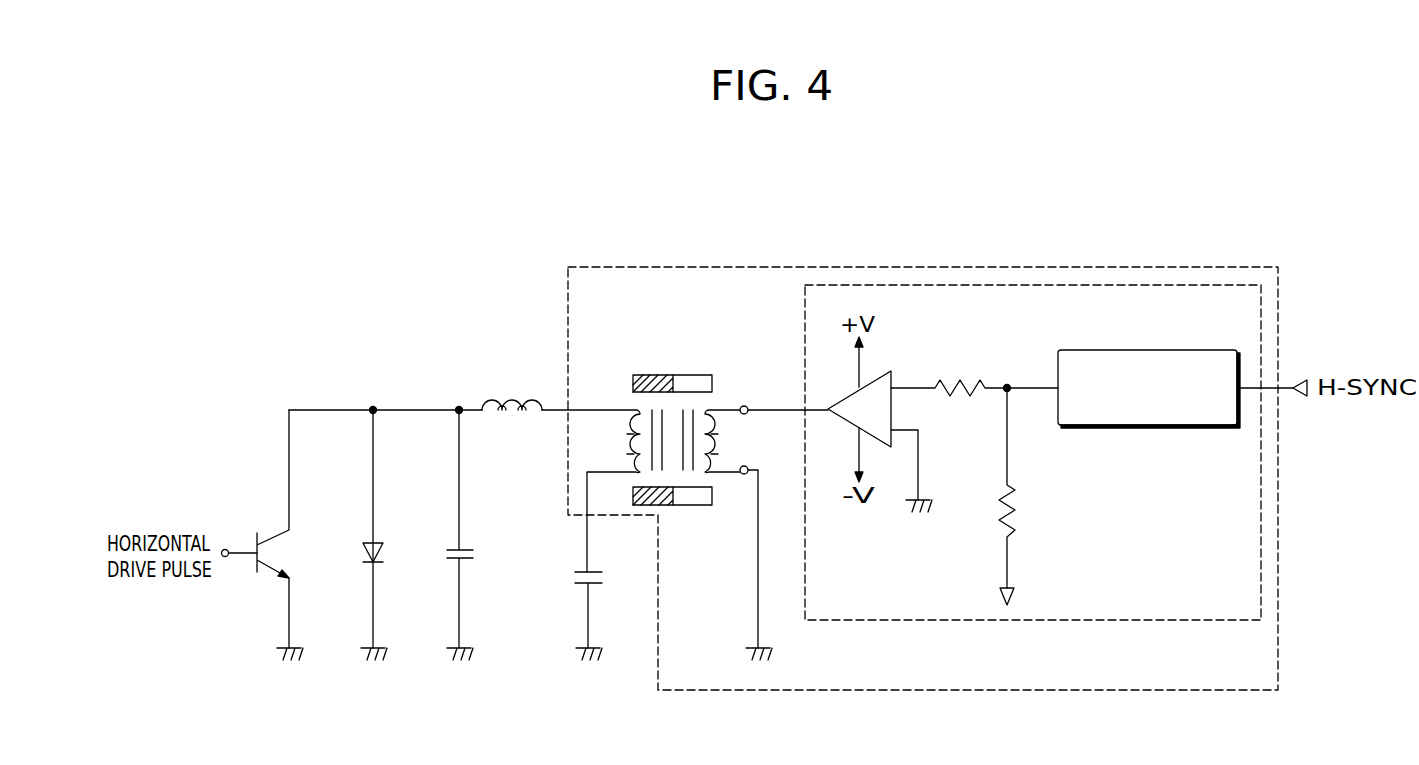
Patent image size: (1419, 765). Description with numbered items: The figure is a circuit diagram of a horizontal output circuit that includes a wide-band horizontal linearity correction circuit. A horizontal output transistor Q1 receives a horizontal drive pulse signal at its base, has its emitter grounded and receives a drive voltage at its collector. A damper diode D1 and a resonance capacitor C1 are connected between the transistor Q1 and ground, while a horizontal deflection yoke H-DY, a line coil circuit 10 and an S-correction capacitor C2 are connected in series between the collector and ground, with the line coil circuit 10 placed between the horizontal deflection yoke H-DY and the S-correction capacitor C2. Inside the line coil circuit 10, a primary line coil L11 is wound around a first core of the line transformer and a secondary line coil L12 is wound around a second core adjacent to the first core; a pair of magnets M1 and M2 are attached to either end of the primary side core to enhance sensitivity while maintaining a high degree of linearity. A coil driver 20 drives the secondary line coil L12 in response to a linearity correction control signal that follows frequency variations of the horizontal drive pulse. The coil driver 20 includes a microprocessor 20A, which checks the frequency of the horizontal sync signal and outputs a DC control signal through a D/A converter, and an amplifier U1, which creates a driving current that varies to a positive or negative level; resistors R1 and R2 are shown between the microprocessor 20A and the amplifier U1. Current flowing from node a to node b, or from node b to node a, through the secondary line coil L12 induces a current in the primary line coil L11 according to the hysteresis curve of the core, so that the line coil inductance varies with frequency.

The line coil circuit 10 is at (1018, 267).
The coil driver 20 is at (858, 285).
The microprocessor 20A is at (1128, 350).
The horizontal output transistor Q1 is at (281, 535).
The damper diode D1 is at (360, 535).
The resonance capacitor C1 is at (445, 535).
The S-correction capacitor C2 is at (572, 613).
The horizontal deflection yoke H-DY is at (516, 389).
The magnet M1 is at (660, 375).
The magnet M2 is at (662, 505).
The primary line coil L11 is at (591, 491).
The secondary line coil L12 is at (735, 441).
The node a is at (747, 406).
The node b is at (748, 473).
The amplifier U1 is at (880, 424).
The resistor R1 is at (974, 377).
The resistor R2 is at (990, 496).